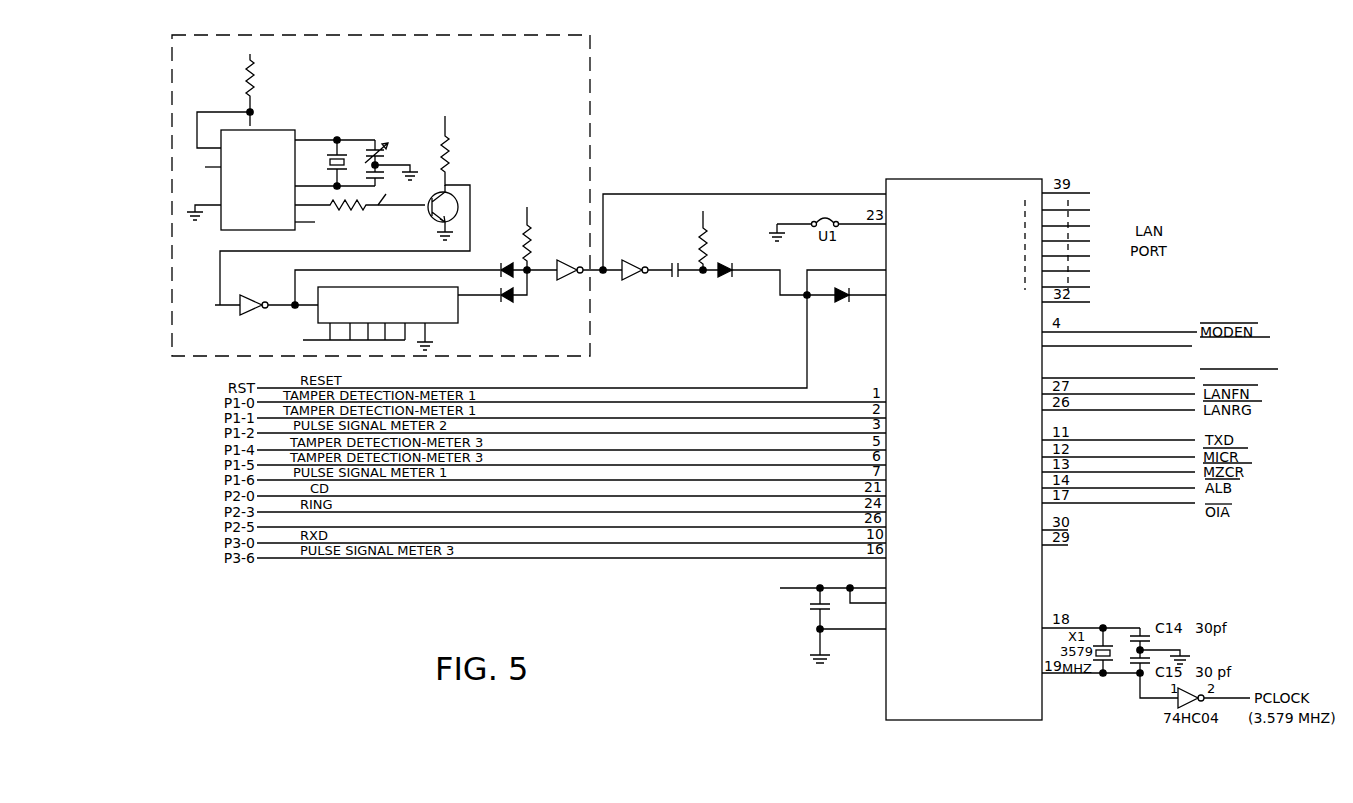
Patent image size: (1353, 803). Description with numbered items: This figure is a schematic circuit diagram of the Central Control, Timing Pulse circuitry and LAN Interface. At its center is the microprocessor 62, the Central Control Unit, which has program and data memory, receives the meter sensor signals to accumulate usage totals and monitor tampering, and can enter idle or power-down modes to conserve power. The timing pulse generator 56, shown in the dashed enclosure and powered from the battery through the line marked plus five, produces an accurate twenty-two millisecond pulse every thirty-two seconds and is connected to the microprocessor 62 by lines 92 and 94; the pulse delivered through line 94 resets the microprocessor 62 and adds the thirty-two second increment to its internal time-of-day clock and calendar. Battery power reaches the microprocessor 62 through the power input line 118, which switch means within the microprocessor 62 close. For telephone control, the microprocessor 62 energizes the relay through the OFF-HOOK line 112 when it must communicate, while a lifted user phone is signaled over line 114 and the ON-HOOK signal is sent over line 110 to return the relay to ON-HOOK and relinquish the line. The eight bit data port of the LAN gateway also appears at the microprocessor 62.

The timing pulse generator 56 is at (590, 75).
The microprocessor 62 is at (995, 179).
The line 92 is at (703, 197).
The line 94 is at (711, 278).
The ON-HOOK line 110 is at (1188, 346).
The OFF-HOOK line 112 is at (1123, 381).
The line 114 is at (493, 525).
The power input line 118 is at (793, 590).